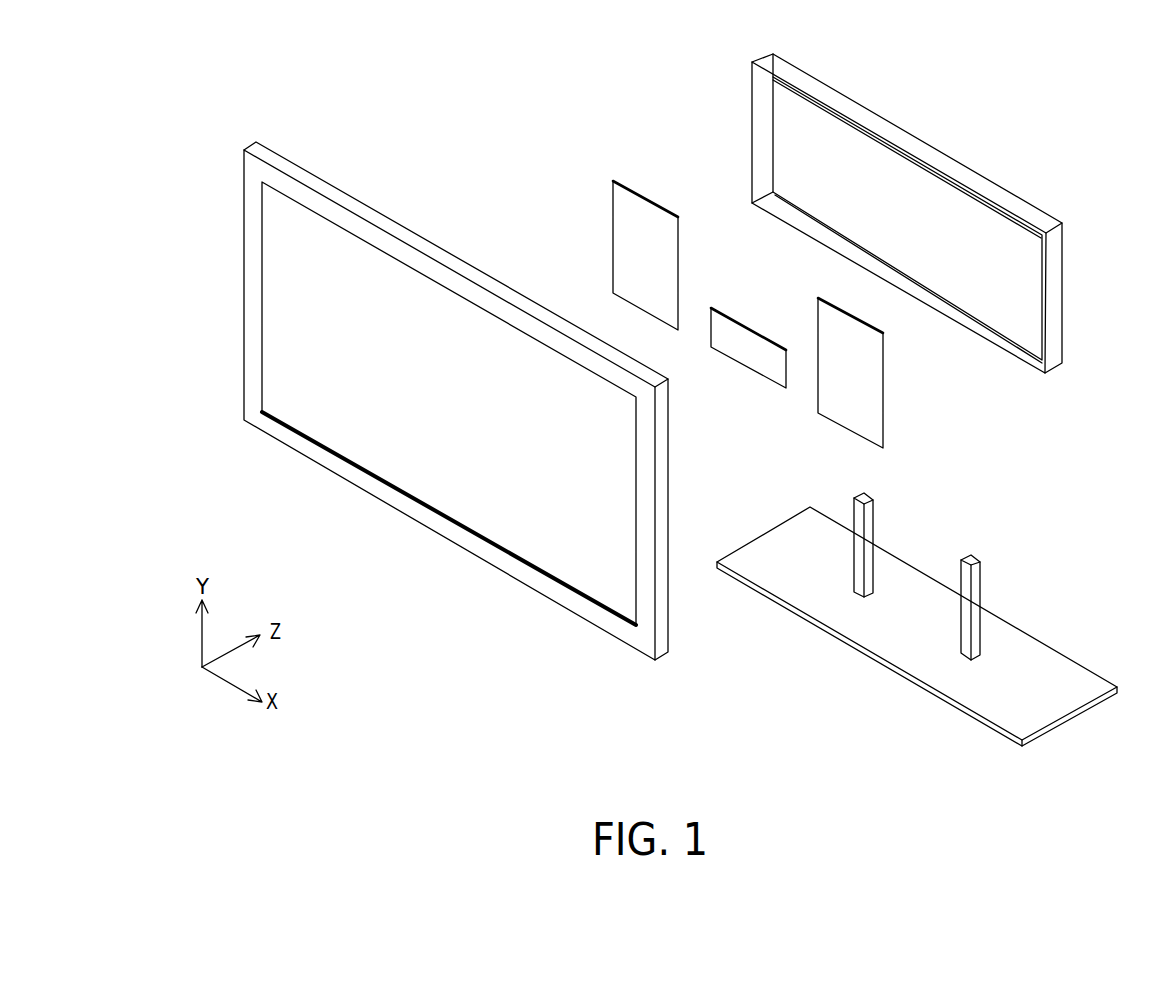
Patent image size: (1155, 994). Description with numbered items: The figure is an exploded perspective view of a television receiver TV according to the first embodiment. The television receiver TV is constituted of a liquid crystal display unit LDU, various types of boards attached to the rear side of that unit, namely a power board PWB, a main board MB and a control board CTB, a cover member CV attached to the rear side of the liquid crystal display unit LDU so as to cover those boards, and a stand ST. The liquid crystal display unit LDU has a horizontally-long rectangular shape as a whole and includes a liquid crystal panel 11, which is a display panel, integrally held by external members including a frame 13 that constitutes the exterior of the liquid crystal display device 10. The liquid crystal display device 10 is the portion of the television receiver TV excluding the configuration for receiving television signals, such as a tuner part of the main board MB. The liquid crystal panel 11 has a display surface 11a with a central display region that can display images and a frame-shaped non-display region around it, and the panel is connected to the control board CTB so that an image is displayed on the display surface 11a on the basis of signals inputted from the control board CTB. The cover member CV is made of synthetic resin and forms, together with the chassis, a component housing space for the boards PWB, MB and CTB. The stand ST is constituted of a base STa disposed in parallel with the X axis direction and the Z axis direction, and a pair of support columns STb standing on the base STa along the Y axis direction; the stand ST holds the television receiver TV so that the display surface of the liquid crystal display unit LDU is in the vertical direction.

The television receiver TV is at (335, 63).
The liquid crystal display device 10 is at (472, 133).
The liquid crystal display unit LDU is at (243, 255).
The frame 13 is at (257, 172).
The liquid crystal panel 11 is at (423, 482).
The display surface 11a is at (350, 430).
The main board MB is at (645, 195).
The control board CTB is at (748, 328).
The power board PWB is at (883, 383).
The cover member CV is at (907, 132).
The stand ST is at (917, 610).
The base STa is at (898, 636).
The support columns STb is at (958, 572).